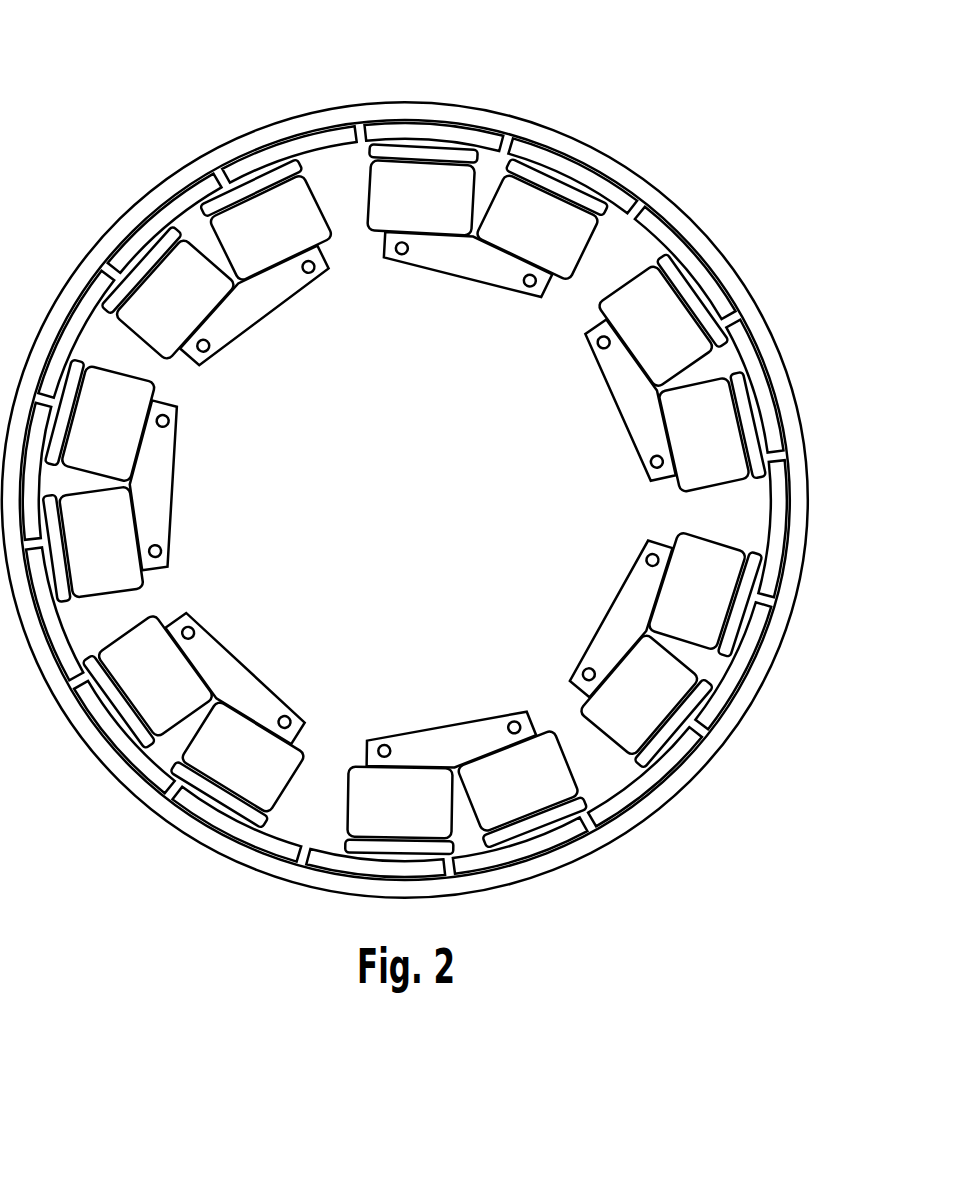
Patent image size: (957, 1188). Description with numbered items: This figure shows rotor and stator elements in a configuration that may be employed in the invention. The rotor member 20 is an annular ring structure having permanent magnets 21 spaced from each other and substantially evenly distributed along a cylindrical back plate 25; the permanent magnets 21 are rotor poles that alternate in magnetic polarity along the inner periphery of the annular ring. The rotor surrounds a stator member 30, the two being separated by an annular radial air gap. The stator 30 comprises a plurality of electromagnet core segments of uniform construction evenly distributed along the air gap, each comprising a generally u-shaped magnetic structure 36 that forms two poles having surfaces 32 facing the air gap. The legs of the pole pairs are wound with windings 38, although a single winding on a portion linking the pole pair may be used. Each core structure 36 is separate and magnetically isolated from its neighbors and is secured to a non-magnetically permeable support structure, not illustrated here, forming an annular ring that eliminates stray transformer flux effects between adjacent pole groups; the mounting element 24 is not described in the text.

The rotor member 20 is at (420, 479).
The permanent magnets 21 is at (658, 208).
The mounting bracket 24 is at (500, 284).
The cylindrical back plate 25 is at (593, 150).
The stator member 30 is at (233, 445).
The pole surfaces 32 is at (404, 152).
The u-shaped magnetic structure 36 is at (423, 238).
The windings 38 is at (440, 177).